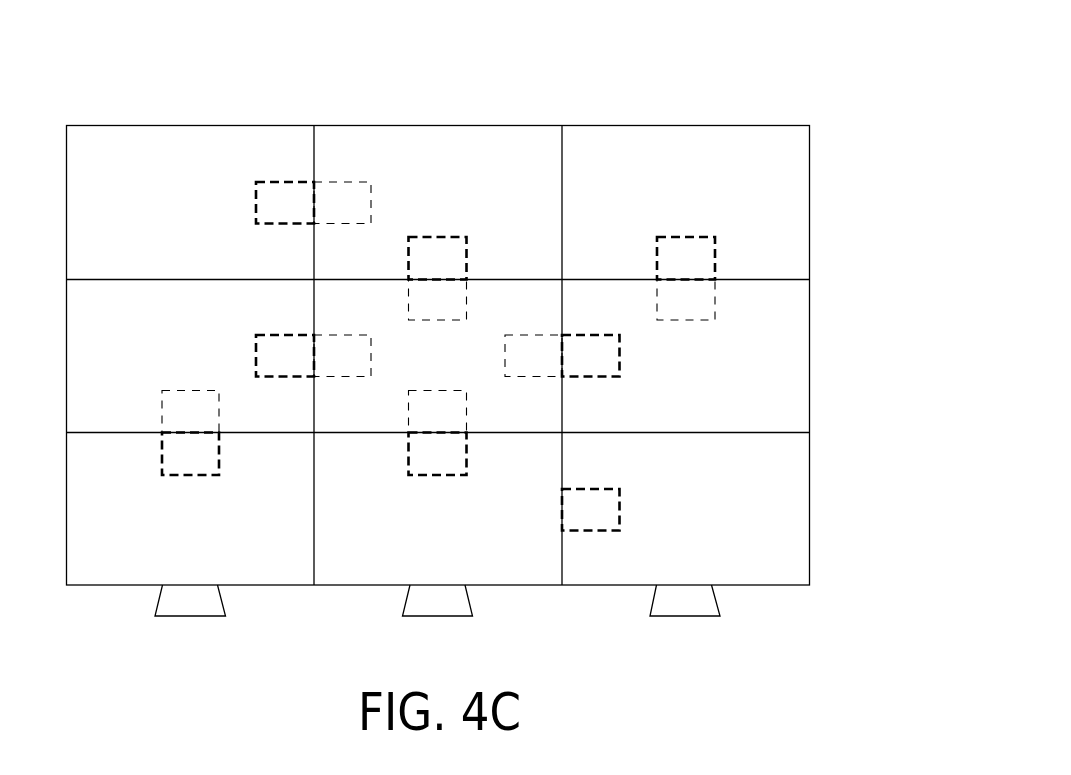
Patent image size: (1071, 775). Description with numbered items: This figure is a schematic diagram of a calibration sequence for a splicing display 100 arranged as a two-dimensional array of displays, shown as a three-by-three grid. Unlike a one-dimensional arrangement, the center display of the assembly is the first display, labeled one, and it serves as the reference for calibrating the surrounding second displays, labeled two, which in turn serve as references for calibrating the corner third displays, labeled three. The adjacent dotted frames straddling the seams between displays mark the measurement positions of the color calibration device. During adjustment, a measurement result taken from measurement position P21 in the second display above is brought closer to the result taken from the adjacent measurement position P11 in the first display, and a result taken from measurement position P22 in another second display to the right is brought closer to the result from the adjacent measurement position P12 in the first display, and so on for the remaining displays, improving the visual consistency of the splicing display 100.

The splicing display 100 is at (672, 79).
The measurement position P11 is at (438, 300).
The measurement position P21 is at (438, 258).
The measurement position P12 is at (533, 356).
The measurement position P22 is at (591, 356).